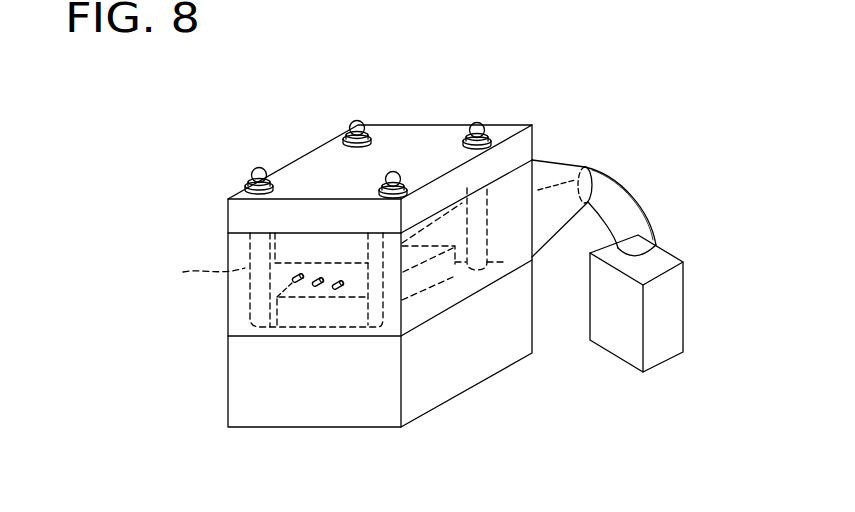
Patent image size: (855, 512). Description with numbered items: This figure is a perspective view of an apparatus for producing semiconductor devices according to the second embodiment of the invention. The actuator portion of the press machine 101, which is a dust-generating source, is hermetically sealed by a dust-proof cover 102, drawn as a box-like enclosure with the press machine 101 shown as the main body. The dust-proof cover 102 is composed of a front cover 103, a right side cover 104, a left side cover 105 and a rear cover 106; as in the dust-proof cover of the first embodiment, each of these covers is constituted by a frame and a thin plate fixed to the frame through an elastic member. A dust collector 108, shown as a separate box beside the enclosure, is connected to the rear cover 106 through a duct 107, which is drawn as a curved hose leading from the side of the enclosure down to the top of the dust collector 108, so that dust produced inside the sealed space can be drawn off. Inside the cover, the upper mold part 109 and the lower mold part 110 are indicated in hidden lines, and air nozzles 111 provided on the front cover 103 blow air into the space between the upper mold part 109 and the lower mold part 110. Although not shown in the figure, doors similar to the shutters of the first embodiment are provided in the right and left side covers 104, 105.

The battery housing 101 is at (410, 147).
The dust-proof cover 102 is at (228, 298).
The front cover 103 is at (238, 313).
The right side cover 104 is at (520, 187).
The left side cover 105 is at (193, 272).
The rear cover 106 is at (505, 190).
The duct 107 is at (637, 192).
The dust collector 108 is at (668, 257).
The upper mold part 109 is at (287, 253).
The lower mold part 110 is at (307, 312).
The air nozzles 111 is at (302, 273).